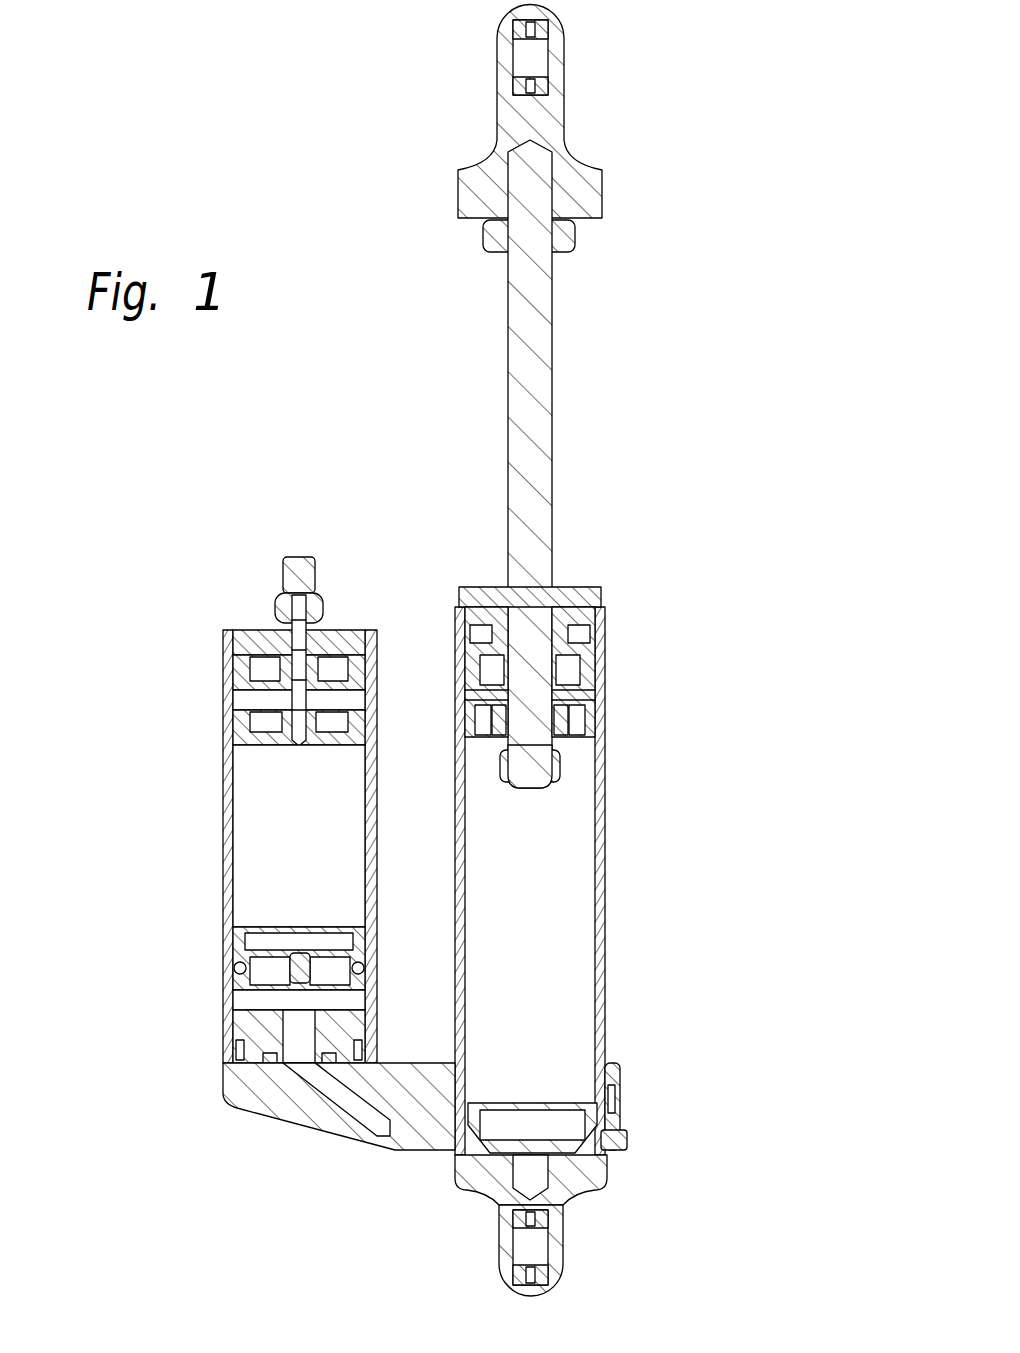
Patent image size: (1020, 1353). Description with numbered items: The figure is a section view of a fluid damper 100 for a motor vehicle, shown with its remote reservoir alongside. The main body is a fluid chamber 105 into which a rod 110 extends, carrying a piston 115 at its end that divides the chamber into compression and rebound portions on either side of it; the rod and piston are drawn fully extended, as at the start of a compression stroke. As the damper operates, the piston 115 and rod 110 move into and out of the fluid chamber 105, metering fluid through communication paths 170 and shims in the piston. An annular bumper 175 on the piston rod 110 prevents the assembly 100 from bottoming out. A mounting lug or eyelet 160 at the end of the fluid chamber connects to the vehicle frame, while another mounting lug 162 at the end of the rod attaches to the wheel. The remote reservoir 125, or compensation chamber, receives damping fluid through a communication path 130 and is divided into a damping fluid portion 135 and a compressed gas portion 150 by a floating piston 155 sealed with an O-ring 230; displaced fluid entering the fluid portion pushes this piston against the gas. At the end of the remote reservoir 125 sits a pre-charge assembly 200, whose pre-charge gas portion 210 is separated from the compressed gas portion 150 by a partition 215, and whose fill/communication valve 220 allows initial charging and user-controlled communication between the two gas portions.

The fluid damper 100 is at (692, 358).
The fluid chamber 105 is at (607, 838).
The rod 110 is at (553, 425).
The piston 115 is at (560, 712).
The remote reservoir 125 is at (215, 807).
The communication path 130 is at (357, 1102).
The damping fluid portion 135 is at (245, 1000).
The compressed gas portion 150 is at (275, 865).
The floating piston 155 is at (255, 938).
The mounting lug 160 is at (563, 1248).
The mounting lug 162 is at (565, 48).
The communication paths 170 is at (485, 725).
The annular bumper 175 is at (577, 240).
The pre-charge assembly 200 is at (277, 871).
The pre-charge gas portion 210 is at (250, 686).
The partition 215 is at (245, 726).
The fill/communication valve 220 is at (322, 610).
The O-ring 230 is at (240, 968).